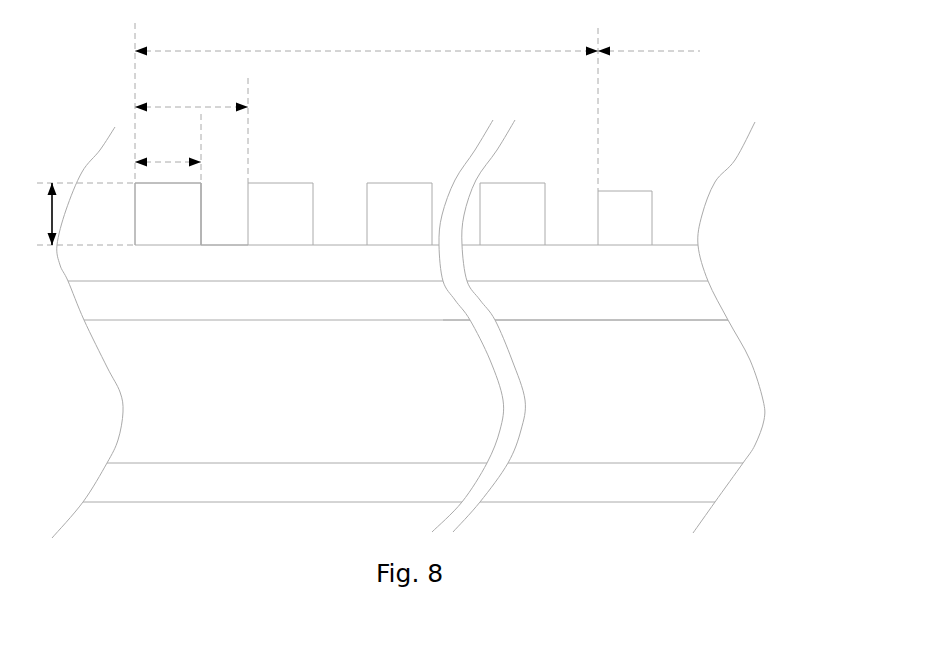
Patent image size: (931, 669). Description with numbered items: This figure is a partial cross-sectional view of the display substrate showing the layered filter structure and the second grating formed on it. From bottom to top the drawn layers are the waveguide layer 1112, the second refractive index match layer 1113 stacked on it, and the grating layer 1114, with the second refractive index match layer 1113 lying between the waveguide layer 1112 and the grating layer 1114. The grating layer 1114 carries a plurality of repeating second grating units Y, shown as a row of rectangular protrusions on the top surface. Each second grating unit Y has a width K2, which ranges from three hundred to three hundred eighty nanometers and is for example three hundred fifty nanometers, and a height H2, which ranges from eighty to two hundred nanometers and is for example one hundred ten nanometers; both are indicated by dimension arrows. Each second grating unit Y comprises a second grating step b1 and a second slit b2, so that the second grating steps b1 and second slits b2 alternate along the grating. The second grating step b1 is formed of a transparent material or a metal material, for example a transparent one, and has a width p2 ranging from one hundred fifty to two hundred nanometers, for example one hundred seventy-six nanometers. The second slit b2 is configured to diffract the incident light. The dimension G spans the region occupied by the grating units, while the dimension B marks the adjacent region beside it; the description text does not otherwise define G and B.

The width of patterned region G is at (366, 39).
The width of blank region B is at (649, 39).
The width of second grating unit K2 is at (191, 90).
The width of second grating step p2 is at (168, 146).
The height of second grating unit H2 is at (39, 214).
The second grating unit Y is at (193, 105).
The second grating step b1 is at (168, 212).
The second slit b2 is at (216, 235).
The grating layer 1114 is at (680, 210).
The second refractive index match layer 1113 is at (665, 263).
The waveguide layer 1112 is at (675, 300).